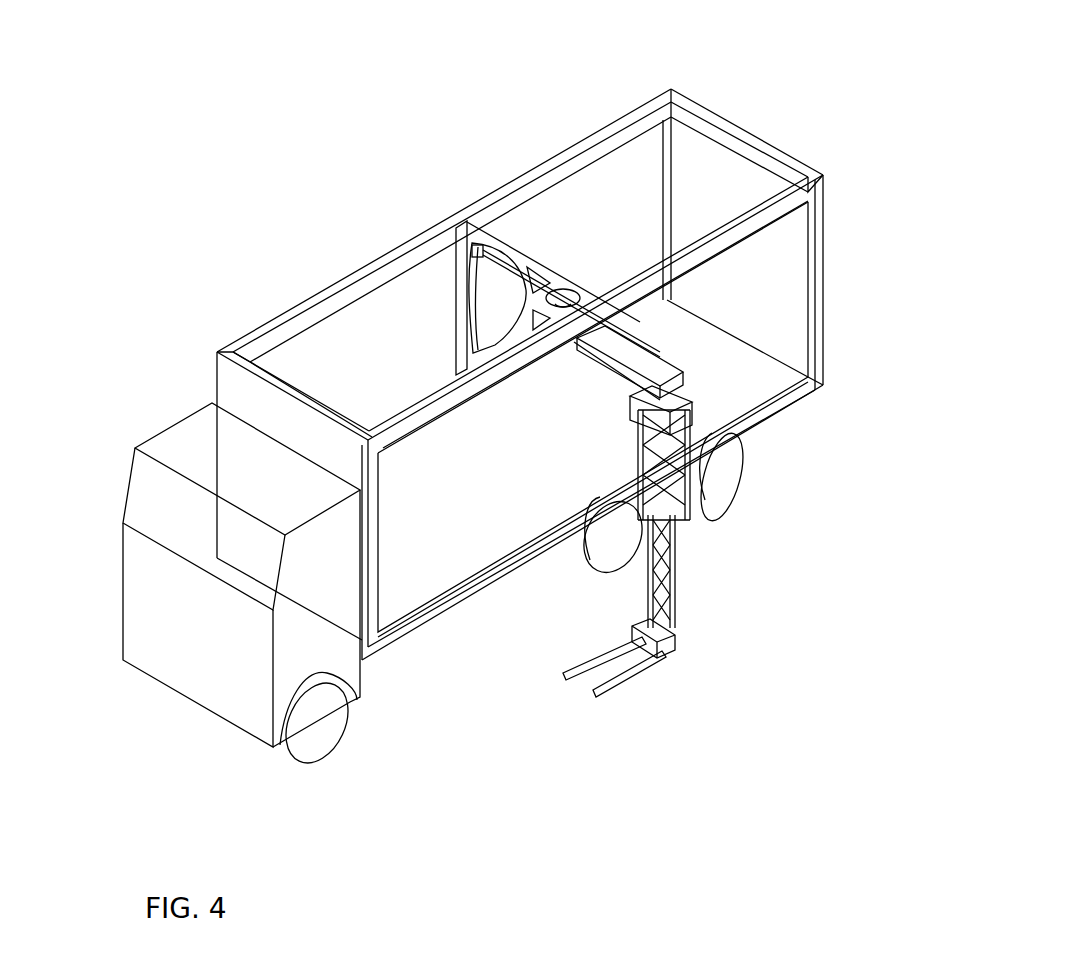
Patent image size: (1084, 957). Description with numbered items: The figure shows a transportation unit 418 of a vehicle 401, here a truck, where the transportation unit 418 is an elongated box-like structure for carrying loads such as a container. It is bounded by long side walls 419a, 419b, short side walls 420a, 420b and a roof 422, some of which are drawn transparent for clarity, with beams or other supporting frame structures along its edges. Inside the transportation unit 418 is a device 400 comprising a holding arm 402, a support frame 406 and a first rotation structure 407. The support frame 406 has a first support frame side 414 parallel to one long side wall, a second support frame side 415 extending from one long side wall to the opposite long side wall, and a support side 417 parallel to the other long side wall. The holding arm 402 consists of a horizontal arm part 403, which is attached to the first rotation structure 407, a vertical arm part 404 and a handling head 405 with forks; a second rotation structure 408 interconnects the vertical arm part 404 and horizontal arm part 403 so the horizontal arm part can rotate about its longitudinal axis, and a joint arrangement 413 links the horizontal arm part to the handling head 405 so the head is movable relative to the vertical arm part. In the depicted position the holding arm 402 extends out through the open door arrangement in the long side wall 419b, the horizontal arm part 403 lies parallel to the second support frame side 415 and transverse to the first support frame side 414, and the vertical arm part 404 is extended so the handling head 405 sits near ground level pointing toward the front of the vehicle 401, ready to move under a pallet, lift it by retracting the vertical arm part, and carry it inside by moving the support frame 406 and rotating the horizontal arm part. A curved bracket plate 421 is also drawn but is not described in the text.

The device 400 is at (538, 253).
The vehicle 401 is at (190, 443).
The holding arm 402 is at (685, 537).
The horizontal arm part 403 is at (640, 358).
The vertical arm part 404 is at (672, 560).
The handling head 405 is at (650, 672).
The support frame 406 is at (403, 303).
The first rotation structure 407 is at (567, 304).
The second rotation structure 408 is at (693, 400).
The joint arrangement 413 is at (660, 642).
The first support frame side 414 is at (500, 352).
The second support frame side 415 is at (538, 264).
The support side 417 is at (472, 245).
The transportation unit 418 is at (338, 277).
The long side wall 419a is at (492, 192).
The long side wall 419b is at (752, 212).
The short side wall 420a is at (297, 387).
The short side wall 420b is at (762, 142).
The curved bracket plate 421 is at (513, 272).
The roof 422 is at (368, 264).